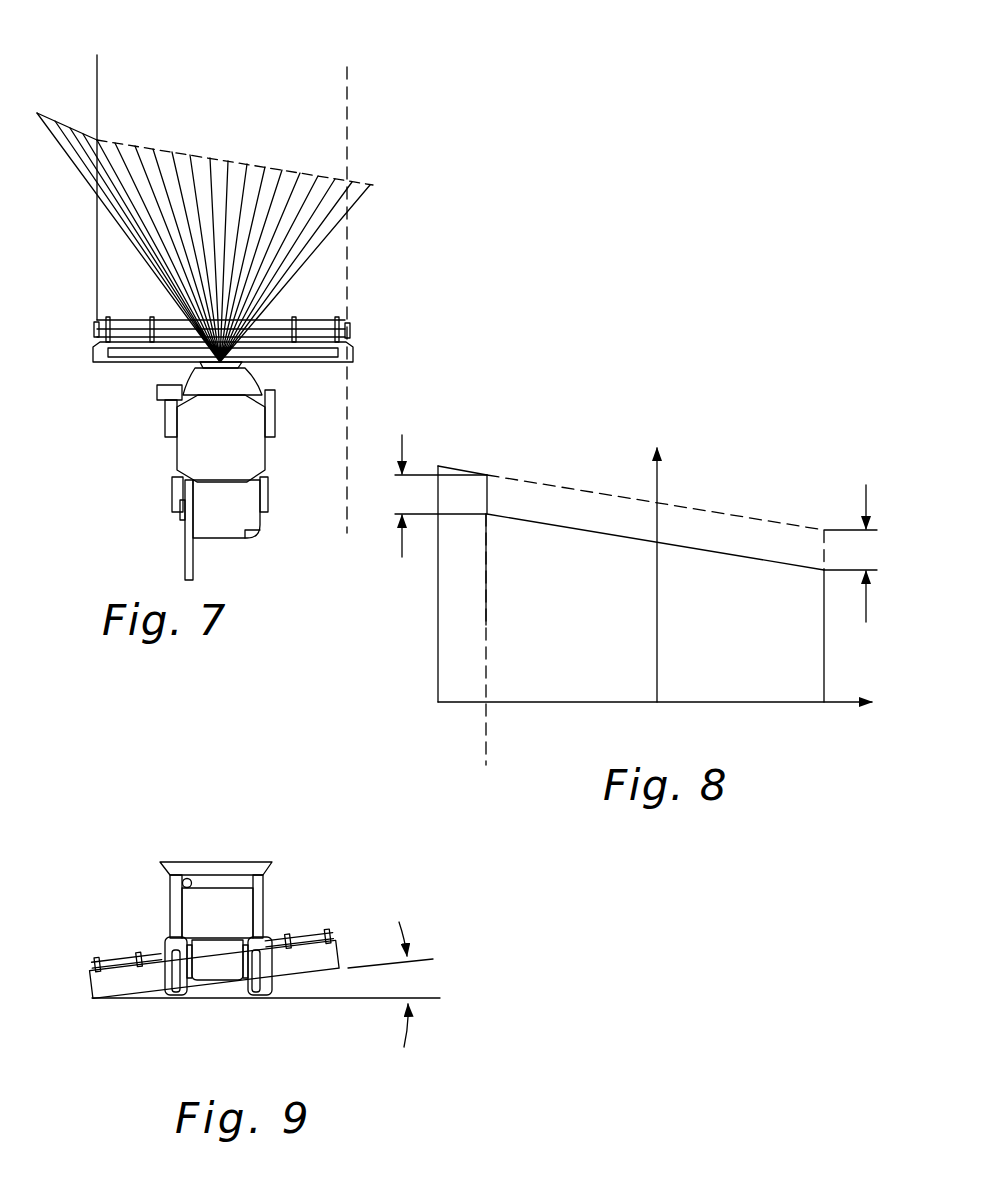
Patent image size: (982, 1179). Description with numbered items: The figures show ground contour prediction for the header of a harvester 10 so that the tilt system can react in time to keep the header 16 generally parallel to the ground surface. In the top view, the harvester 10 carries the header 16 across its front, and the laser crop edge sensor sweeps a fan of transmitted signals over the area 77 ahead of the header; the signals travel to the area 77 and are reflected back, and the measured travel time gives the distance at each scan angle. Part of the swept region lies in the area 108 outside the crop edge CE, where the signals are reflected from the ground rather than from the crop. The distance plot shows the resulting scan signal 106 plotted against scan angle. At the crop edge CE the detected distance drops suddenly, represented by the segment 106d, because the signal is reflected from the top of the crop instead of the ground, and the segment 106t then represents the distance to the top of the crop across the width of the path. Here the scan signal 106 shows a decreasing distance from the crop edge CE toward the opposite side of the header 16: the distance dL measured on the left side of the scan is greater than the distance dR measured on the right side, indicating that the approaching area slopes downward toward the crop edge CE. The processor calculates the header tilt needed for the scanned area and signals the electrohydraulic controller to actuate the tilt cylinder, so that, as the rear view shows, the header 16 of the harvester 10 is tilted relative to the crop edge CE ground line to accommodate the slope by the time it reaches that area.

In FIG. 7, the harvester 10 is at (148, 486).
In FIG. 9, the harvester 10 is at (162, 844).
In FIG. 9, the header 16 is at (137, 942).
In FIG. 7, the area 77 is at (384, 187).
In FIG. 7, the area outside the crop edge 108 is at (63, 107).
In FIG. 8, the scan signal 106 is at (676, 563).
In FIG. 8, the segment of the scan signal 106t is at (588, 533).
In FIG. 8, the segment of the scan signal 106d is at (434, 479).
In FIG. 7, the crop edge CE is at (97, 272).
In FIG. 8, the crop edge CE is at (485, 733).
In FIG. 9, the crop edge CE is at (92, 1003).
In FIG. 8, the distance measured on the left side of the scan dL is at (486, 623).
In FIG. 8, the distance measured on the right side of the scan dR is at (824, 603).